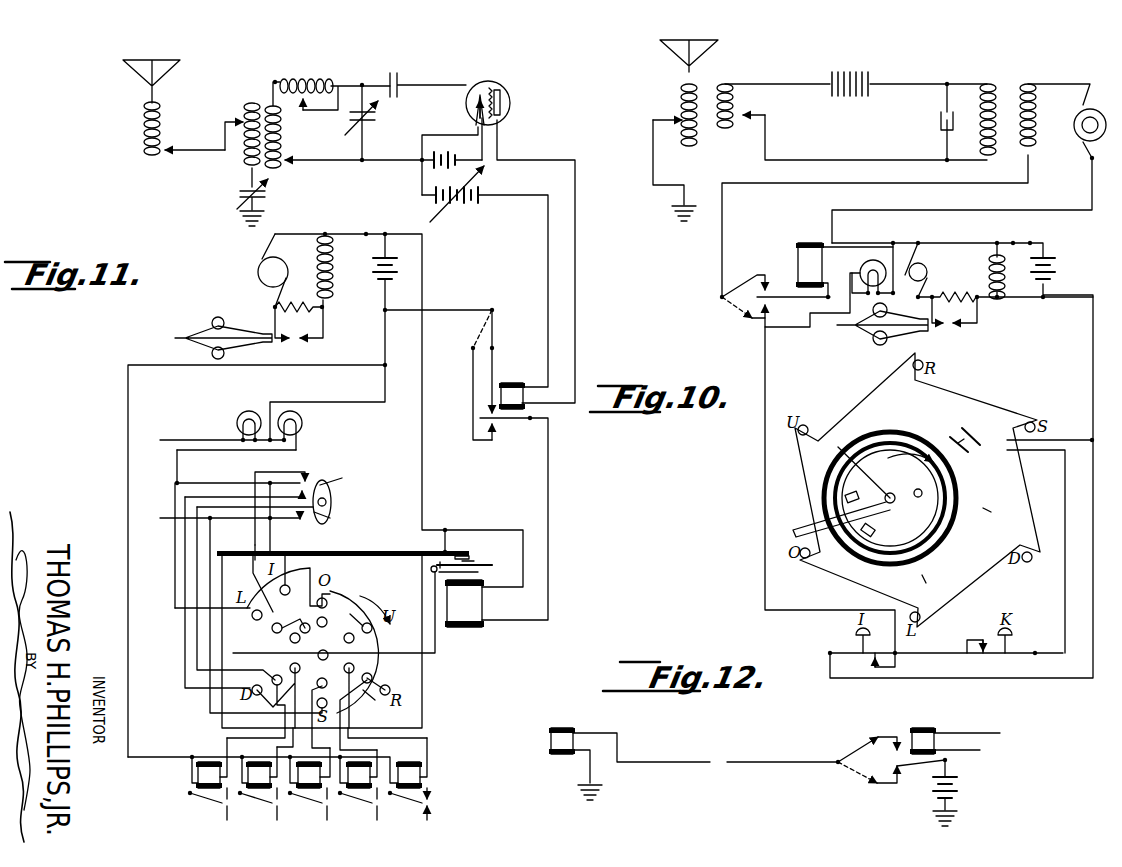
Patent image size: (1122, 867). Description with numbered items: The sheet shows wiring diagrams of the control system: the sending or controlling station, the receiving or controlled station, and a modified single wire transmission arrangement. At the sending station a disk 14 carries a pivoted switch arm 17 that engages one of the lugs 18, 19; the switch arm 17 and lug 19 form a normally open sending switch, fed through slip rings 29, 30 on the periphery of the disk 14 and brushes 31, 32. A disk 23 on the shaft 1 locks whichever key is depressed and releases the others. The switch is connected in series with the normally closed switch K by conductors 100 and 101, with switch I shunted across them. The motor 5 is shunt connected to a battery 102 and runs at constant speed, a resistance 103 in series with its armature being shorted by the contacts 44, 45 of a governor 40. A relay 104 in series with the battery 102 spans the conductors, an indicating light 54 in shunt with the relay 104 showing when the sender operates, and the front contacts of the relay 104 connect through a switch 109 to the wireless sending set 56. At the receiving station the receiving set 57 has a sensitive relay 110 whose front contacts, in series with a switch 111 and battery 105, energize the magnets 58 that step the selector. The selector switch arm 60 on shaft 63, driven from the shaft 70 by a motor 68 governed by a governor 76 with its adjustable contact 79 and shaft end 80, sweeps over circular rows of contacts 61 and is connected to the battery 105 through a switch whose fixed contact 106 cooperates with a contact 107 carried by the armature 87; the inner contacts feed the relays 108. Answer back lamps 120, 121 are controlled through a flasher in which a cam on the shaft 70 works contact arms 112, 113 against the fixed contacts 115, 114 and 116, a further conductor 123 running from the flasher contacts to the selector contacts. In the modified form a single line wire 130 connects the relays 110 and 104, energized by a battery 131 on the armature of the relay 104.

In FIG. 10, the shaft 1 is at (890, 498).
In FIG. 10, the motor 5 is at (932, 270).
In FIG. 10, the disk 14 is at (910, 448).
In FIG. 10, the switch arm 17 is at (832, 492).
In FIG. 10, the lug 18 is at (877, 537).
In FIG. 10, the lug 19 is at (857, 487).
In FIG. 10, the disk 23 is at (971, 401).
In FIG. 10, the slip ring 29 is at (976, 511).
In FIG. 10, the slip ring 30 is at (934, 589).
In FIG. 10, the brush 31 is at (966, 451).
In FIG. 10, the brush 32 is at (986, 431).
In FIG. 10, the governor 40 is at (882, 331).
In FIG. 10, the contact 44 is at (936, 325).
In FIG. 10, the contact 45 is at (965, 321).
In FIG. 10, the indicating light 54 is at (867, 257).
In FIG. 10, the sending set 56 is at (850, 103).
In FIG. 11, the receiving or detecting set 57 is at (496, 242).
In FIG. 11, the receiving means 58 is at (464, 603).
In FIG. 11, the switch arm 60 is at (256, 658).
In FIG. 11, the contacts 61 is at (352, 617).
In FIG. 11, the shaft 63 is at (312, 640).
In FIG. 11, the motor 68 is at (295, 270).
In FIG. 11, the shaft 70 is at (338, 497).
In FIG. 11, the governor 76 is at (226, 321).
In FIG. 11, the adjustable contact 79 is at (314, 341).
In FIG. 11, the end of governor shaft 80 is at (290, 341).
In FIG. 11, the armature 87 is at (478, 572).
In FIG. 10, the conductor 100 is at (1062, 600).
In FIG. 10, the conductor 101 is at (1092, 418).
In FIG. 10, the battery 102 is at (1061, 268).
In FIG. 10, the resistance 103 is at (1004, 286).
In FIG. 10, the relay 104 is at (800, 238).
In FIG. 12, the relay 104 is at (922, 725).
In FIG. 11, the battery 105 is at (333, 337).
In FIG. 11, the fixed contact 106 is at (470, 557).
In FIG. 11, the contact 107 is at (486, 568).
In FIG. 11, the relays 108 is at (437, 774).
In FIG. 10, the switch 109 is at (748, 270).
In FIG. 11, the sensitive relay 110 is at (514, 491).
In FIG. 12, the sensitive relay 110 is at (551, 745).
In FIG. 11, the switch 111 is at (503, 374).
In FIG. 11, the movable contact arm 112 is at (345, 477).
In FIG. 11, the movable contact arm 113 is at (332, 517).
In FIG. 11, the fixed contact 114 is at (246, 528).
In FIG. 11, the fixed contact 115 is at (295, 497).
In FIG. 11, the fixed contact 116 is at (296, 500).
In FIG. 11, the lamp 120 is at (243, 418).
In FIG. 11, the lamp 121 is at (306, 427).
In FIG. 11, the conductor 123 is at (253, 534).
In FIG. 12, the single line wire 130 is at (660, 760).
In FIG. 12, the battery 131 is at (962, 792).